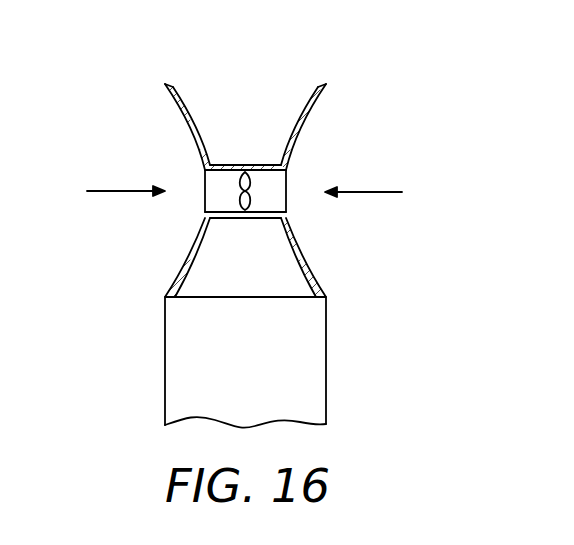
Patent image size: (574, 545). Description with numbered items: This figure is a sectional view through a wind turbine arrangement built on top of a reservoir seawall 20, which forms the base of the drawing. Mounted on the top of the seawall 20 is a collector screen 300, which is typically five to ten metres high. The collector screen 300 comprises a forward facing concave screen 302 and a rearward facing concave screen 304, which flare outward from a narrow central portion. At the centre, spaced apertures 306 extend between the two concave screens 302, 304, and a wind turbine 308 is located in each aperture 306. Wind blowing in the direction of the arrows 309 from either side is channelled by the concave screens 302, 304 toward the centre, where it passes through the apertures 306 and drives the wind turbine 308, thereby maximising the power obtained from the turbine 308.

The collector screen 300 is at (268, 168).
The forward facing concave screen 302 is at (305, 92).
The rearward facing concave screen 304 is at (186, 90).
The aperture 306 is at (214, 195).
The wind turbine 308 is at (243, 163).
The wind direction arrows 309 is at (117, 190).
The seawall 20 is at (326, 340).